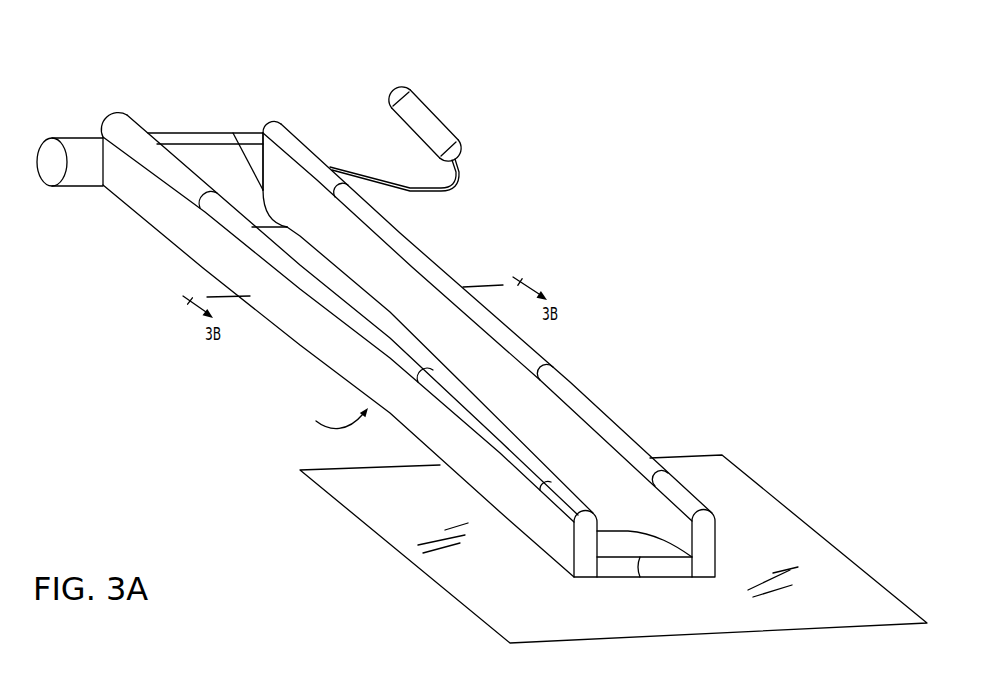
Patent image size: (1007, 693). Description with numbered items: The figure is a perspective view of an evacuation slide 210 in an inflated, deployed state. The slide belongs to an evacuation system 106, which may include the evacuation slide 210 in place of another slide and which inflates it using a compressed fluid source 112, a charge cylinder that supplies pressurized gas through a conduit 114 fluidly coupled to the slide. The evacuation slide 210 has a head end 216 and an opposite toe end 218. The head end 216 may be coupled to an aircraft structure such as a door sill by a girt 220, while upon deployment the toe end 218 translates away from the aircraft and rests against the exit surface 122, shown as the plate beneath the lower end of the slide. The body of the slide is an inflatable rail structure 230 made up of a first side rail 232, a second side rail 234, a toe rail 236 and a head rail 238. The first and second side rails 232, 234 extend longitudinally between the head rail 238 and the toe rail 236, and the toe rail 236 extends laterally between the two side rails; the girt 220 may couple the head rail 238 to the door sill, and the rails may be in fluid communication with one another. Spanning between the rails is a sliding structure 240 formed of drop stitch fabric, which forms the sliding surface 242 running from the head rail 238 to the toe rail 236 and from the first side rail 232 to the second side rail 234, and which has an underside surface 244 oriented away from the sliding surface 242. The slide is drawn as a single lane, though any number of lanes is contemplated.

The evacuation system 106 is at (453, 133).
The compressed fluid source 112 is at (427, 125).
The conduit 114 is at (442, 189).
The exit surface 122 is at (510, 591).
The evacuation slide 210 is at (407, 323).
The head end 216 is at (166, 122).
The toe end 218 is at (666, 573).
The girt 220 is at (228, 183).
The inflatable rail structure 230 is at (173, 230).
The first side rail 232 is at (303, 338).
The second side rail 234 is at (597, 412).
The toe rail 236 is at (643, 568).
The head rail 238 is at (87, 163).
The sliding structure 240 is at (338, 288).
The sliding surface 242 is at (281, 226).
The underside surface 244 is at (334, 415).